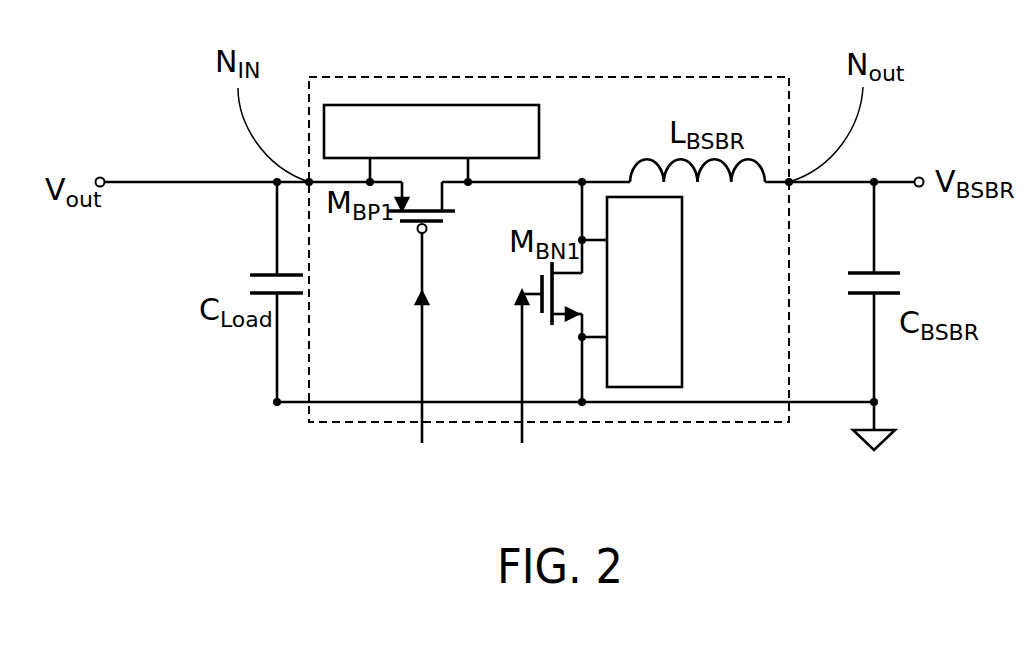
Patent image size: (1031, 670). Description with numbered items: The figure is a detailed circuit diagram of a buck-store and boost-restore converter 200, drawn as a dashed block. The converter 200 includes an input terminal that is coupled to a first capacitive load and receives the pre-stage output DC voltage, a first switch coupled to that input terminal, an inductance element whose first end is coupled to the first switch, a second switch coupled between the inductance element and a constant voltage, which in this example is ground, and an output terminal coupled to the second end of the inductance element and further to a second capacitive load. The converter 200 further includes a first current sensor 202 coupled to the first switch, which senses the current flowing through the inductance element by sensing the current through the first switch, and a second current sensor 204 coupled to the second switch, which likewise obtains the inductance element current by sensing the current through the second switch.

The buck-store and boost-restore converter 200 is at (537, 77).
The first current sensor 202 is at (539, 125).
The second current sensor 204 is at (682, 293).